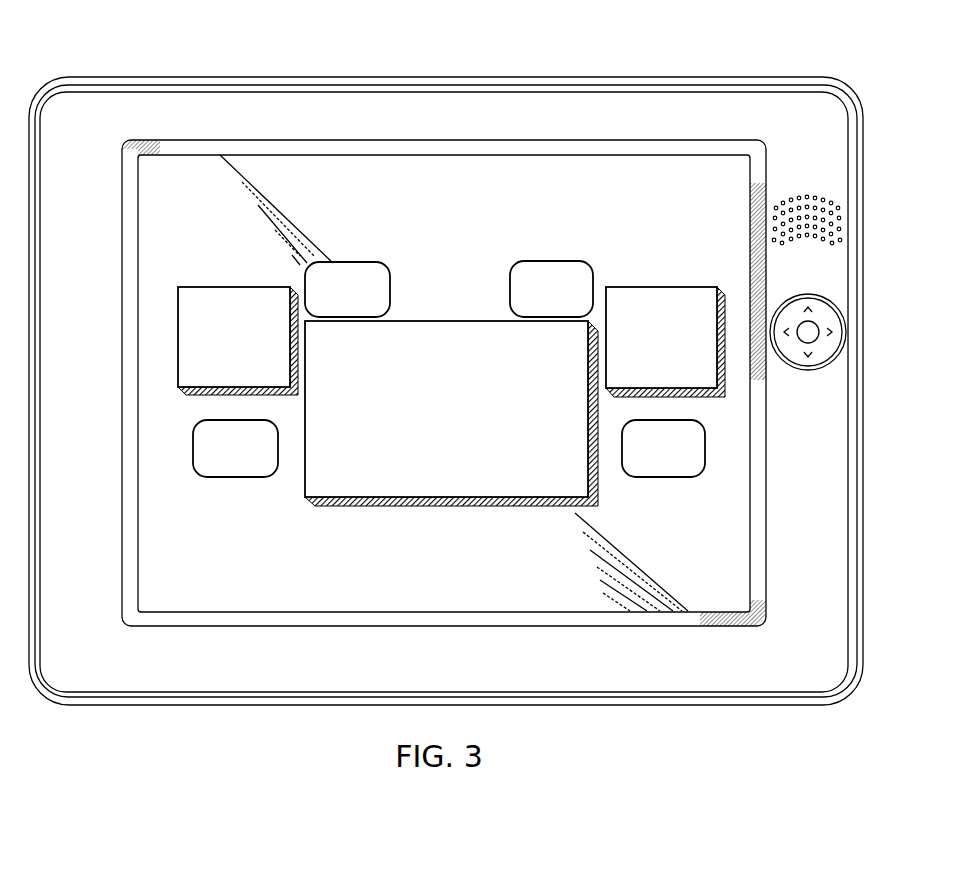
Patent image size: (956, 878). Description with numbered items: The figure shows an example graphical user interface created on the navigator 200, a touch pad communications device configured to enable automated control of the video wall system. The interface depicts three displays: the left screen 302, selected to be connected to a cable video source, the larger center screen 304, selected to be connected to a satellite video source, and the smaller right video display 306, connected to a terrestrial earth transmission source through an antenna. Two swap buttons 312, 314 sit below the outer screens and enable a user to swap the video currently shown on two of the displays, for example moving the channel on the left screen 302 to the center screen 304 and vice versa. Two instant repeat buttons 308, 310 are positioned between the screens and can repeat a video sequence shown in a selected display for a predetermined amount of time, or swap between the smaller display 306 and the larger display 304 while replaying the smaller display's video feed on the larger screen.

The navigator 200 is at (194, 54).
The left screen 302 is at (228, 287).
The center screen 304 is at (445, 321).
The video display 306 is at (660, 287).
The instant repeat button 308 is at (343, 262).
The instant repeat button 310 is at (550, 261).
The swap button 312 is at (237, 477).
The swap button 314 is at (662, 477).